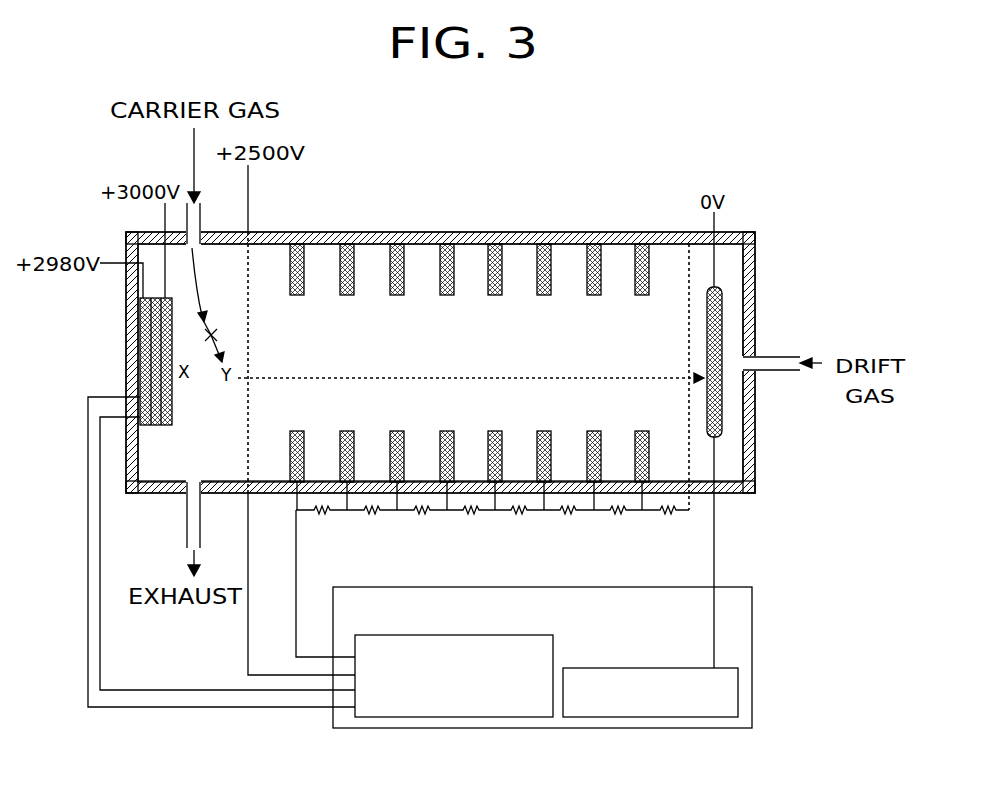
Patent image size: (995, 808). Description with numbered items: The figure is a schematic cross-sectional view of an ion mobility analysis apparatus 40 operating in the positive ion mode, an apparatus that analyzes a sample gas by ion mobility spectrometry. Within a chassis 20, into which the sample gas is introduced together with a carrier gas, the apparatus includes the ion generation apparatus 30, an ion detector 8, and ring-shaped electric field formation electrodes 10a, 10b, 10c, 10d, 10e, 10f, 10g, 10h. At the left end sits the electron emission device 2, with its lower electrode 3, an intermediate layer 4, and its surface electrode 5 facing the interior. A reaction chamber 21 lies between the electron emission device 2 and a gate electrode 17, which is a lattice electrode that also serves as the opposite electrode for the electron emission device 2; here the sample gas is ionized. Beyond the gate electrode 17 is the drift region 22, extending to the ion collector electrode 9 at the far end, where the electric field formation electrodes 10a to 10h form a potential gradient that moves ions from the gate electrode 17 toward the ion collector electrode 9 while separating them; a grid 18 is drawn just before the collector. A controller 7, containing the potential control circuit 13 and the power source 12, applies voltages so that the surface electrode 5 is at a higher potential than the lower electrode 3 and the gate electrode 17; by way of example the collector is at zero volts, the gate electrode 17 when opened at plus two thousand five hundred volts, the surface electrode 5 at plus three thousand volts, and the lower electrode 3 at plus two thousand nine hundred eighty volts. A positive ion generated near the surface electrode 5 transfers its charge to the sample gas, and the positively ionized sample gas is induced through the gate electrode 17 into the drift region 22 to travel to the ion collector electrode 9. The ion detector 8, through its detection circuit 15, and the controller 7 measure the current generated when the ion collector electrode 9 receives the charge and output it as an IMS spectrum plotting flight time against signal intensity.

The ion mobility analysis apparatus 40 is at (742, 203).
The chassis 20 is at (755, 256).
The drift region 22 is at (708, 477).
The ion collector electrode 9 is at (715, 396).
The ion detector 8 is at (650, 692).
The aperture grid 18 is at (690, 438).
The gate electrode 17 is at (301, 420).
The ion generation apparatus 30 is at (156, 361).
The electron emission device 2 is at (88, 361).
The lower electrode 3 is at (140, 307).
The second electrode 4 is at (140, 345).
The surface electrode 5 is at (140, 378).
The reaction chamber 21 is at (203, 397).
The electric field formation electrode 10a is at (297, 246).
The electric field formation electrode 10b is at (347, 246).
The electric field formation electrode 10c is at (397, 246).
The electric field formation electrode 10d is at (447, 246).
The electric field formation electrode 10e is at (495, 246).
The electric field formation electrode 10f is at (544, 246).
The electric field formation electrode 10g is at (594, 246).
The electric field formation electrode 10h is at (642, 246).
The controller 7 is at (542, 657).
The potential control circuit 13 is at (454, 676).
The power source 12 is at (454, 676).
The detection circuit 15 is at (650, 692).